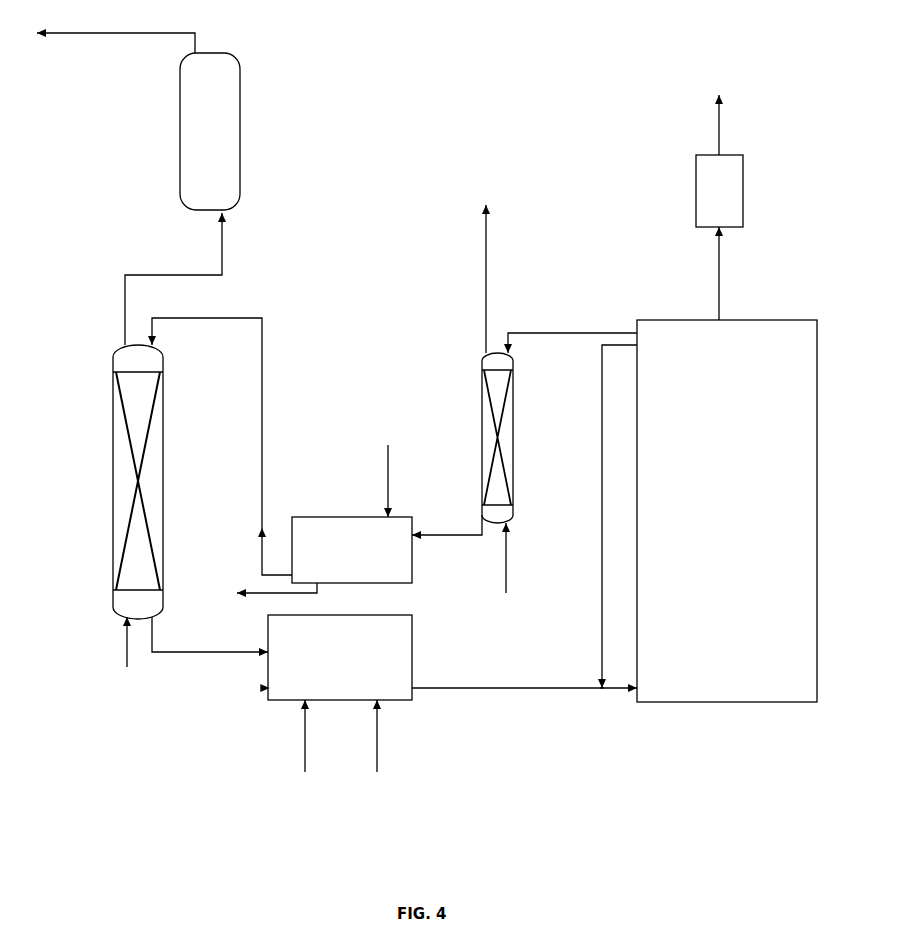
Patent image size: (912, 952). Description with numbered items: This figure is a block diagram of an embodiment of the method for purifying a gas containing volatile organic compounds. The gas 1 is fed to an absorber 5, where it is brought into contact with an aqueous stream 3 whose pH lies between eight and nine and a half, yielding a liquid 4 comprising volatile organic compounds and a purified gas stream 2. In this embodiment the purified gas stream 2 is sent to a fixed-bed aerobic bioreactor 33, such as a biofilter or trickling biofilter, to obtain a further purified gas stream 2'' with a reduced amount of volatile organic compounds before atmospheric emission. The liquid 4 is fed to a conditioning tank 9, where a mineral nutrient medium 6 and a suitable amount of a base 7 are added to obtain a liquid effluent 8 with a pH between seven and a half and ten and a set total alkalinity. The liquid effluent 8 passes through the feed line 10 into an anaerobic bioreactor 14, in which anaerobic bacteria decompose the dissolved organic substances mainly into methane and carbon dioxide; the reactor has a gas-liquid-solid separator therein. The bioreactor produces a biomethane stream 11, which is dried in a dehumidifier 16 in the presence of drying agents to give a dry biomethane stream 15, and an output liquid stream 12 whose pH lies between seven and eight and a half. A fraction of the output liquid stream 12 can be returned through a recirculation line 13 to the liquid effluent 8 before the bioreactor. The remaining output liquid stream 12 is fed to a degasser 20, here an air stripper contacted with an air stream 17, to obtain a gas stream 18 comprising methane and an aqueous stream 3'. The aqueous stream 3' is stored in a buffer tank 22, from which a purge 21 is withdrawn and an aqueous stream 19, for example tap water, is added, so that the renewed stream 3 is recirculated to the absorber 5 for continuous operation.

The gas 1 is at (127, 653).
The purified gas stream 2 is at (160, 279).
The purified gas stream 2'' is at (116, 63).
The aqueous stream 3 is at (222, 432).
The aqueous stream 3' is at (447, 515).
The liquid 4 is at (185, 653).
The absorber 5 is at (112, 480).
The mineral nutrient medium 6 is at (303, 748).
The base 7 is at (376, 748).
The liquid effluent 8 is at (493, 690).
The conditioning tank 9 is at (412, 677).
The feed line 10 is at (612, 690).
The biomethane stream 11 is at (718, 268).
The output liquid stream 12 is at (557, 333).
The recirculation line 13 is at (600, 452).
The anaerobic bioreactor 14 is at (757, 320).
The dry biomethane stream 15 is at (718, 113).
The dehumidifier 16 is at (695, 188).
The air stream 17 is at (508, 568).
The gas stream 18 is at (486, 287).
The aqueous stream 19 is at (387, 446).
The degasser 20 is at (482, 438).
The purge 21 is at (257, 592).
The buffer tank 22 is at (352, 515).
The fixed-bed aerobic bioreactor 33 is at (178, 128).